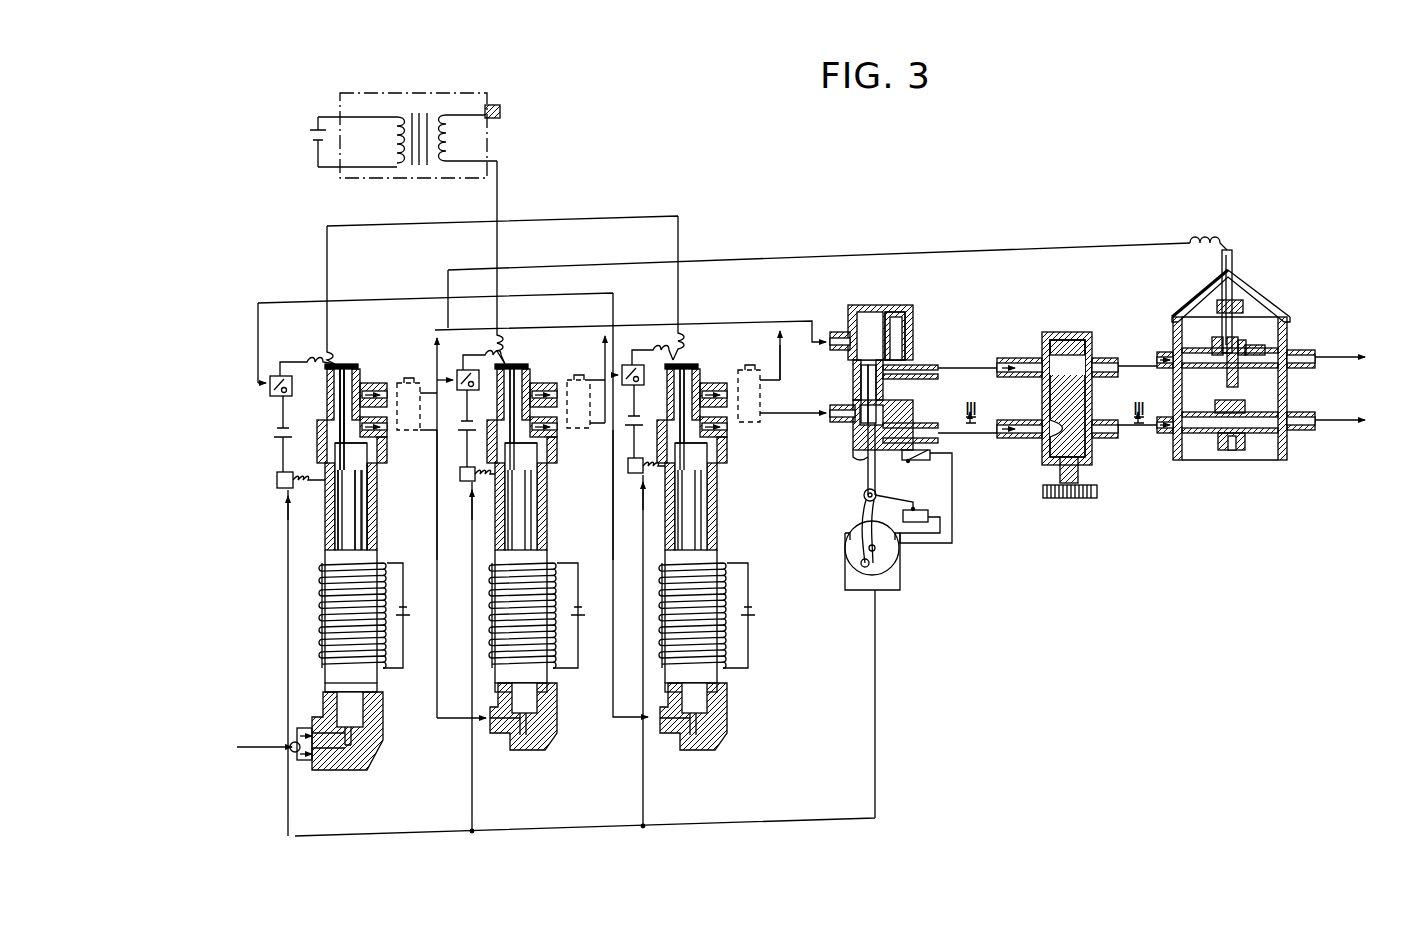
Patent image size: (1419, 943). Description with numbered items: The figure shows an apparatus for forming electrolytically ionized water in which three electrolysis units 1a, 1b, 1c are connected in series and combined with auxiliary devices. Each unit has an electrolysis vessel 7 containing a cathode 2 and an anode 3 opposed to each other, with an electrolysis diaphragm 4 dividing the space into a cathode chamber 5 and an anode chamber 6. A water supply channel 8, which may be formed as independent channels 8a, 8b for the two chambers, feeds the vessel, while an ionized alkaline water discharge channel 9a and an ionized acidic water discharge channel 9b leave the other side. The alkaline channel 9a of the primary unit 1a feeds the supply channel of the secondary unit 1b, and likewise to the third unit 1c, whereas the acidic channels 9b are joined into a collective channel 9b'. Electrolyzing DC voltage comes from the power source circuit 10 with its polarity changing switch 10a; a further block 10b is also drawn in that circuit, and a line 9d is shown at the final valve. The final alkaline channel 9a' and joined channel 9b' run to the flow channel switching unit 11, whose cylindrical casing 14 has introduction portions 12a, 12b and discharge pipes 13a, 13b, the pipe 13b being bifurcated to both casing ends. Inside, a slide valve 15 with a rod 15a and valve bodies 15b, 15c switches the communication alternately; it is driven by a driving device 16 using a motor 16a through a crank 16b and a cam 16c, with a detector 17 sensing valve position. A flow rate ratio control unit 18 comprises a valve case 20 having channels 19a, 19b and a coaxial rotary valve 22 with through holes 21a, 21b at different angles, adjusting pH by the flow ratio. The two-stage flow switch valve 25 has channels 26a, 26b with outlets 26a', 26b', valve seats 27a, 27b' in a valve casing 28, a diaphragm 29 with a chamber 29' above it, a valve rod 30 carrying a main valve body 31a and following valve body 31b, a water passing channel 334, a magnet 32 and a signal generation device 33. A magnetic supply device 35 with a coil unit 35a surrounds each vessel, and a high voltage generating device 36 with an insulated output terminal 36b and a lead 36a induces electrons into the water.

The primary electrolysis unit 1a is at (380, 545).
The secondary electrolysis unit 1b is at (550, 492).
The third electrolysis unit 1c is at (722, 528).
The cathode 2 is at (338, 492).
The anode 3 is at (348, 503).
The electrolysis diaphragm 4 is at (334, 535).
The cathode chamber 5 is at (363, 475).
The anode chamber 6 is at (356, 495).
The electrolysis vessel 7 is at (375, 515).
The water supply channel 8 is at (375, 798).
The water supply channel on the cathode chamber side 8a is at (310, 758).
The water supply channel on the anode chamber side 8b is at (310, 770).
The ionized alkaline water discharge channel 9a is at (422, 506).
The final-stage ionized alkaline water discharge channel 9a' is at (782, 444).
The ionized acidic water discharge channel 9b is at (409, 330).
The joined acidic water discharge channel 9b' is at (783, 325).
The signal line 9d is at (1185, 372).
The power source circuit 10 is at (278, 422).
The polarity changing switch 10a is at (283, 490).
The control unit 10b is at (268, 390).
The flow channel switching unit 11 is at (918, 335).
The introduction portion 12a is at (840, 333).
The introduction portion 12b is at (821, 423).
The water discharge pipe 13a is at (922, 365).
The water discharge pipe 13b is at (895, 336).
The cylindrical casing 14 is at (868, 390).
The flow channel switching slide valve 15 is at (864, 470).
The rod 15a is at (861, 405).
The valve body 15b is at (835, 416).
The valve body 15c is at (853, 365).
The driving device 16 is at (876, 561).
The motor 16a is at (890, 585).
The crank 16b is at (863, 520).
The cam 16c is at (885, 555).
The detector 17 is at (930, 512).
The flow rate ratio control unit 18 is at (397, 383).
The channel 19a is at (1033, 362).
The channel 19b is at (1030, 435).
The valve case 20 is at (1077, 398).
The through hole 21a is at (1078, 358).
The through hole 21b is at (1082, 460).
The coaxial type rotary valve 22 is at (1085, 400).
The 2-stage flow switch valve 25 is at (1257, 371).
The channel 26a is at (1199, 343).
The channel 26b is at (1217, 454).
The upper outlet 26a' is at (1340, 370).
The lower outlet 26b' is at (1326, 442).
The valve seat 27a is at (1245, 355).
The lower valve seat 27b' is at (1273, 392).
The valve casing 28 is at (1285, 410).
The diaphragm 29 is at (1241, 293).
The chamber above the diaphragm 29' is at (1200, 286).
The valve rod 30 is at (1227, 388).
The main valve body 31a is at (1200, 325).
The following valve body 31b is at (1240, 452).
The magnet 32 is at (1235, 295).
The ON-OFF signal generation device 33 is at (1228, 265).
The valve element 334 is at (1258, 358).
The magnetic supply device 35 is at (408, 622).
The coil unit 35a is at (322, 655).
The high voltage generating device 36 is at (330, 172).
The secondary lead 36a is at (500, 166).
The output terminal 36b is at (500, 112).